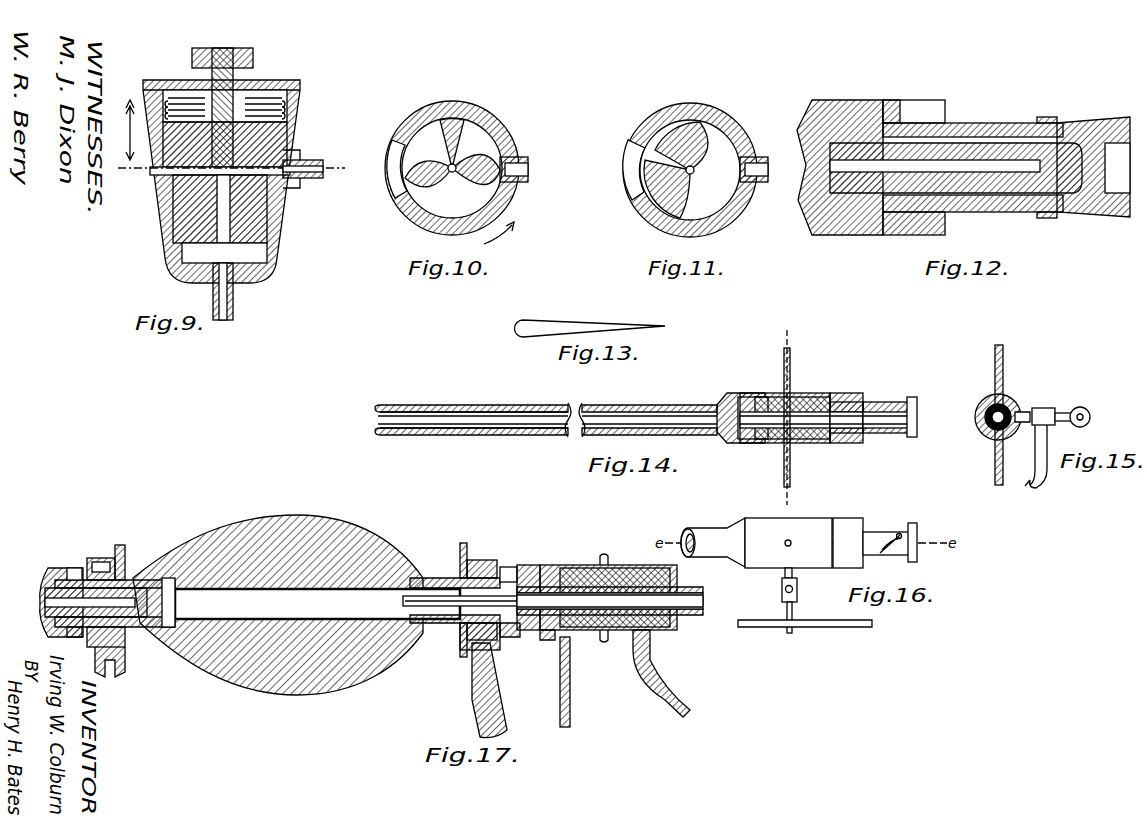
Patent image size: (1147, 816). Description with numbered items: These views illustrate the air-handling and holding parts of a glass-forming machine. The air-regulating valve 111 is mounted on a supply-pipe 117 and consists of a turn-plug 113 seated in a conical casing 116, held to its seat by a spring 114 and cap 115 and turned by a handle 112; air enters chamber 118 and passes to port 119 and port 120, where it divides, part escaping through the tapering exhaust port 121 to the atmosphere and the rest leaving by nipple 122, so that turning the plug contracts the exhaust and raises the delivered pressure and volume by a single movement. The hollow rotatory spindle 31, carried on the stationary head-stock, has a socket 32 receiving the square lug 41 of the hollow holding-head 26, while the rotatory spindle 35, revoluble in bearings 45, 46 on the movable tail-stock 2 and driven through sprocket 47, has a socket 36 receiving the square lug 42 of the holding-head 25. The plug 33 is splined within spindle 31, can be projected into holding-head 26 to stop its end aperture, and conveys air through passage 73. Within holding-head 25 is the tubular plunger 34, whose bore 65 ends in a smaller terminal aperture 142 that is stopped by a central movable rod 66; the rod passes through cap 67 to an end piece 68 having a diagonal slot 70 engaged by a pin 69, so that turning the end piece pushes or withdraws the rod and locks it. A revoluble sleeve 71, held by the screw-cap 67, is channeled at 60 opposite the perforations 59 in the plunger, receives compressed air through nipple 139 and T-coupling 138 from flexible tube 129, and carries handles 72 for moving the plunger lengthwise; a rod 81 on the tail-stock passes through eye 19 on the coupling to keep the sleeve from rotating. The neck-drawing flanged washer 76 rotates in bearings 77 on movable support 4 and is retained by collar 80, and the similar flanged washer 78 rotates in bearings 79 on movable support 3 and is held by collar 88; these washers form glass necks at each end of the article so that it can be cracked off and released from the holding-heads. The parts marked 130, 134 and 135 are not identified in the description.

In FIG. 17, the movable tail-stock 2 is at (570, 688).
In FIG. 17, the movable support 3 is at (498, 685).
In FIG. 17, the movable support 4 is at (110, 667).
In FIG. 15, the eye 19 is at (1080, 407).
In FIG. 16, the eye 19 is at (787, 630).
In FIG. 17, the holding-head 25 is at (415, 642).
In FIG. 12, the holding-head 26 is at (1100, 117).
In FIG. 17, the holding-head 26 is at (176, 600).
In FIG. 12, the rotatory spindle 31 is at (848, 100).
In FIG. 17, the rotatory spindle 31 is at (52, 568).
In FIG. 12, the socket 32 is at (892, 100).
In FIG. 17, the socket 32 is at (73, 568).
In FIG. 12, the plug 33 is at (962, 143).
In FIG. 17, the plug 33 is at (45, 612).
In FIG. 14, the tubular plunger 34 is at (410, 405).
In FIG. 16, the tubular plunger 34 is at (705, 530).
In FIG. 17, the tubular plunger 34 is at (695, 616).
In FIG. 17, the rotatory spindle 35 is at (540, 640).
In FIG. 17, the socket 36 is at (522, 568).
In FIG. 12, the square lug 41 is at (890, 220).
In FIG. 17, the square lug 41 is at (70, 638).
In FIG. 17, the square lug 42 is at (510, 637).
In FIG. 17, the bearing 45 is at (560, 565).
In FIG. 17, the bearing 46 is at (640, 650).
In FIG. 17, the sprocket 47 is at (607, 553).
In FIG. 15, the perforations 59 is at (980, 425).
In FIG. 14, the channel 60 is at (778, 440).
In FIG. 14, the bore of plunger 65 is at (575, 405).
In FIG. 14, the movable rod 66 is at (375, 420).
In FIG. 17, the movable rod 66 is at (703, 606).
In FIG. 14, the cap 67 is at (863, 436).
In FIG. 16, the cap 67 is at (848, 543).
In FIG. 14, the movable end piece 68 is at (886, 402).
In FIG. 16, the movable end piece 68 is at (893, 532).
In FIG. 14, the pin 69 is at (911, 397).
In FIG. 16, the pin 69 is at (910, 523).
In FIG. 16, the diagonal slot 70 is at (884, 556).
In FIG. 14, the revoluble sleeve 71 is at (812, 393).
In FIG. 15, the revoluble sleeve 71 is at (975, 414).
In FIG. 16, the revoluble sleeve 71 is at (788, 543).
In FIG. 14, the handles 72 is at (784, 356).
In FIG. 15, the handles 72 is at (995, 356).
In FIG. 16, the handles 72 is at (786, 541).
In FIG. 12, the air-passage 73 is at (983, 172).
In FIG. 17, the air-passage 73 is at (45, 602).
In FIG. 17, the neck-drawing flanged washer 76 is at (125, 552).
In FIG. 17, the bearings 77 is at (104, 558).
In FIG. 17, the rotatory flanged neck-drawing washer 78 is at (460, 550).
In FIG. 17, the bearings 79 is at (480, 560).
In FIG. 17, the collar 80 is at (92, 558).
In FIG. 16, the rod 81 is at (828, 625).
In FIG. 17, the collar 88 is at (497, 560).
In FIG. 9, the air-regulating valve 111 is at (168, 262).
In FIG. 9, the handle 112 is at (250, 58).
In FIG. 9, the turn-plug 113 is at (285, 118).
In FIG. 10, the turn-plug 113 is at (515, 128).
In FIG. 11, the turn-plug 113 is at (690, 105).
In FIG. 9, the spring 114 is at (295, 96).
In FIG. 9, the cap 115 is at (287, 86).
In FIG. 9, the conical casing 116 is at (287, 205).
In FIG. 10, the conical casing 116 is at (495, 125).
In FIG. 11, the conical casing 116 is at (720, 118).
In FIG. 9, the supply-pipe 117 is at (232, 300).
In FIG. 9, the chamber 118 is at (268, 248).
In FIG. 9, the port 119 is at (222, 206).
In FIG. 10, the port 119 is at (470, 112).
In FIG. 11, the port 119 is at (660, 178).
In FIG. 9, the port 120 is at (270, 168).
In FIG. 10, the port 120 is at (453, 189).
In FIG. 11, the port 120 is at (710, 170).
In FIG. 9, the exhaust port 121 is at (160, 176).
In FIG. 10, the exhaust port 121 is at (412, 128).
In FIG. 11, the exhaust port 121 is at (655, 125).
In FIG. 13, the exhaust port 121 is at (570, 316).
In FIG. 9, the nipple 122 is at (315, 160).
In FIG. 15, the flexible tube 129 is at (1028, 478).
In FIG. 17, the bulb 130 is at (248, 525).
In FIG. 17, the lower collar 134 is at (465, 645).
In FIG. 12, the collar 135 is at (1045, 117).
In FIG. 17, the collar 135 is at (122, 647).
In FIG. 15, the T-coupling 138 is at (1040, 408).
In FIG. 16, the T-coupling 138 is at (782, 597).
In FIG. 15, the nipple 139 is at (1030, 432).
In FIG. 16, the nipple 139 is at (785, 572).
In FIG. 17, the terminal aperture 142 is at (403, 601).